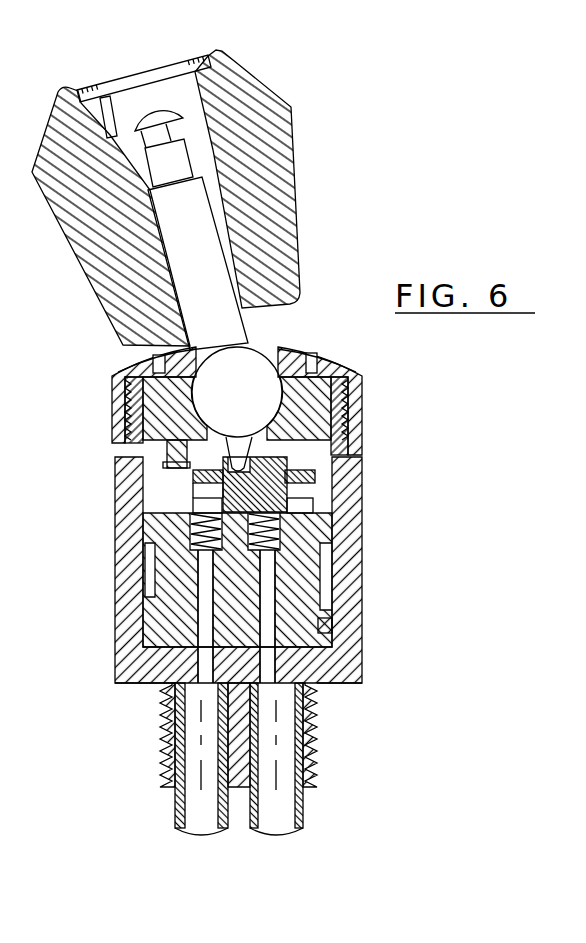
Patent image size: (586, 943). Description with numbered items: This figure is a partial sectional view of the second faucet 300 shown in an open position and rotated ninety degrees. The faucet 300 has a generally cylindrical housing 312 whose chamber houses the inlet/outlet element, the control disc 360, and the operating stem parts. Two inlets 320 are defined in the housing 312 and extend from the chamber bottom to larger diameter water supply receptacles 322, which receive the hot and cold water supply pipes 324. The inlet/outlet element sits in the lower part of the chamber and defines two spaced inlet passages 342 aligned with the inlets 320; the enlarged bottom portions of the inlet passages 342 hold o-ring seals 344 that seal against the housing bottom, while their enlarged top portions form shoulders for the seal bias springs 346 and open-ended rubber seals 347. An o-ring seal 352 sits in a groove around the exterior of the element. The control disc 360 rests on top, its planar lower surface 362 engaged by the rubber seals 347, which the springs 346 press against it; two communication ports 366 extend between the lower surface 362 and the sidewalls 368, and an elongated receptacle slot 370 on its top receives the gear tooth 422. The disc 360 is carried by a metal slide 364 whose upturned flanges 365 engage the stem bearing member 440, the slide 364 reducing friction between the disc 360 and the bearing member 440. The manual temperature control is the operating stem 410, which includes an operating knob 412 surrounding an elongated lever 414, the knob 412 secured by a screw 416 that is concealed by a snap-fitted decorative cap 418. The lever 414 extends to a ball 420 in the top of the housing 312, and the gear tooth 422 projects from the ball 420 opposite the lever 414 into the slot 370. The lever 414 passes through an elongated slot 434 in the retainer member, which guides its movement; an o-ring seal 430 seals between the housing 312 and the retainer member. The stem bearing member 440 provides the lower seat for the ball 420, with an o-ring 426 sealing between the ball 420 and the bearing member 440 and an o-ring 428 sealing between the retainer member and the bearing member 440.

The faucet 300 is at (251, 434).
The housing 312 is at (322, 757).
The inlets 320 is at (270, 683).
The water supply receptacles 322 is at (178, 797).
The water supply pipes 324 is at (305, 812).
The inlet passages 342 is at (350, 596).
The o-ring seals 344 is at (175, 680).
The seal bias springs 346 is at (205, 540).
The rubber seals 347 is at (215, 508).
The o-ring seal 352 is at (330, 628).
The control disc 360 is at (278, 514).
The lower surface 362 is at (205, 560).
The metal slide 364 is at (193, 476).
The upturned flanges 365 is at (320, 470).
The communication ports 366 is at (340, 498).
The sidewalls 368 is at (288, 470).
The receptacle slot 370 is at (222, 483).
The operating stem 410 is at (273, 90).
The operating knob 412 is at (288, 150).
The lever 414 is at (215, 282).
The screw 416 is at (140, 115).
The decorative cap 418 is at (172, 66).
The ball 420 is at (217, 368).
The gear tooth 422 is at (243, 447).
The o-ring 426 is at (340, 383).
The o-ring 428 is at (352, 425).
The o-ring seal 430 is at (143, 420).
The elongated slot 434 is at (272, 345).
The stem bearing member 440 is at (167, 457).